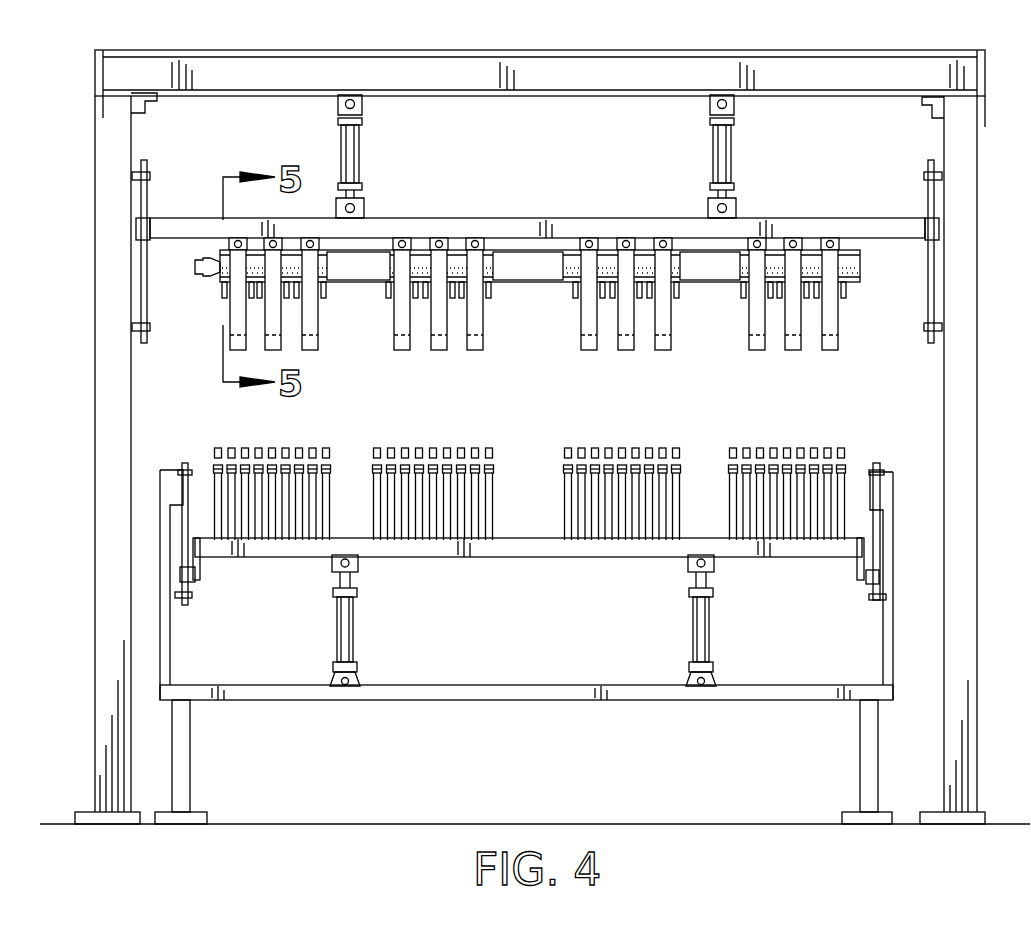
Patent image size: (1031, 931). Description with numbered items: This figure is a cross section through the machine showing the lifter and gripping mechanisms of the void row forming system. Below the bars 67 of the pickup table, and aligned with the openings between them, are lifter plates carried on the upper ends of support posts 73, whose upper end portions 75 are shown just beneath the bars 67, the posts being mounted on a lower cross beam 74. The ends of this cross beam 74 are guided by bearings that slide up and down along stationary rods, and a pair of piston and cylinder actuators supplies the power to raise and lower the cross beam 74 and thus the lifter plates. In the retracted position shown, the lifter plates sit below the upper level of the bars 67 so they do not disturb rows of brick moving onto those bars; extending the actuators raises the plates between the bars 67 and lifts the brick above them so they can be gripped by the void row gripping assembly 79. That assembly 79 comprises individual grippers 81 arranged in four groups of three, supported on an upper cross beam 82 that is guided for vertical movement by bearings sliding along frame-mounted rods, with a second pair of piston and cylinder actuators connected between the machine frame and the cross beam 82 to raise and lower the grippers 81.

The bars 67 is at (530, 473).
The support posts 73 is at (530, 494).
The cross beam 74 is at (576, 550).
The pin caps 75 is at (680, 468).
The void row gripping assembly 79 is at (527, 319).
The grippers 81 is at (280, 350).
The cross beam 82 is at (485, 220).